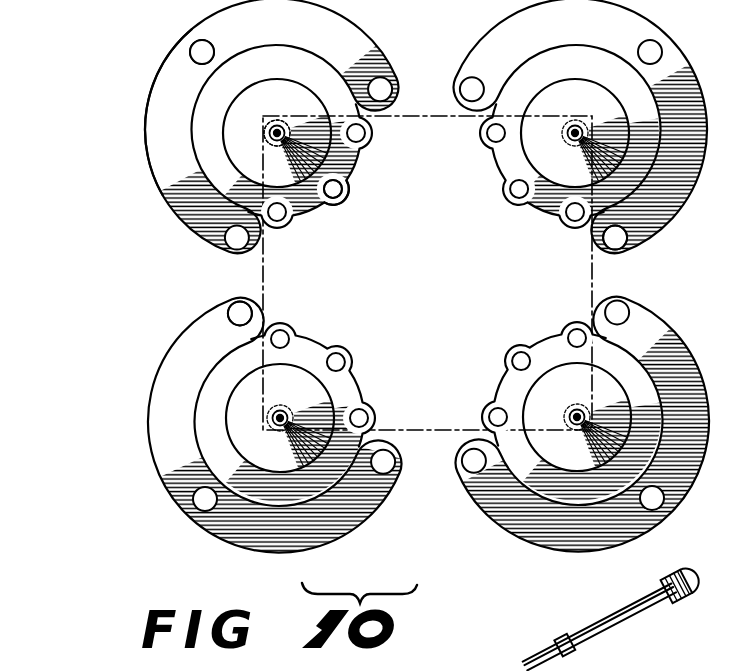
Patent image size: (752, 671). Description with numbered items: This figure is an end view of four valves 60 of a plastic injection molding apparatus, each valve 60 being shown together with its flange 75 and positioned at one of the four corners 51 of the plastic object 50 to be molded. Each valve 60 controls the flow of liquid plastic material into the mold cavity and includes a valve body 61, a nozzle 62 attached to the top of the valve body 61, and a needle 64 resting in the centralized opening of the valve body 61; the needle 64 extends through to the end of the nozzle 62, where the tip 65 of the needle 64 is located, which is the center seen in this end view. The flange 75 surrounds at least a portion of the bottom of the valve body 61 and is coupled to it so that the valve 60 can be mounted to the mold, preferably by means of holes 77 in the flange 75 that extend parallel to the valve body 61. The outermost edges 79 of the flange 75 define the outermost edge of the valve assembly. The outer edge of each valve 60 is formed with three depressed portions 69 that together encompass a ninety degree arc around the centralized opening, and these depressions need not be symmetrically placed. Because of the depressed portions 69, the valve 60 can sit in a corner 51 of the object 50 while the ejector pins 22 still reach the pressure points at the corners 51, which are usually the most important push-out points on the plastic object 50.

The plastic object 50 is at (431, 114).
The valve 60 is at (422, 280).
The valve body 61 is at (188, 146).
The nozzle 62 is at (264, 82).
The tip of the needle 65 is at (575, 424).
The depressed portions 69 is at (345, 186).
The ejector pins 22 is at (335, 199).
The flange 75 is at (633, 258).
The holes 77 is at (198, 48).
The outermost edges 79 is at (156, 107).
The corners 51 is at (299, 116).
The needle 64 is at (751, 652).